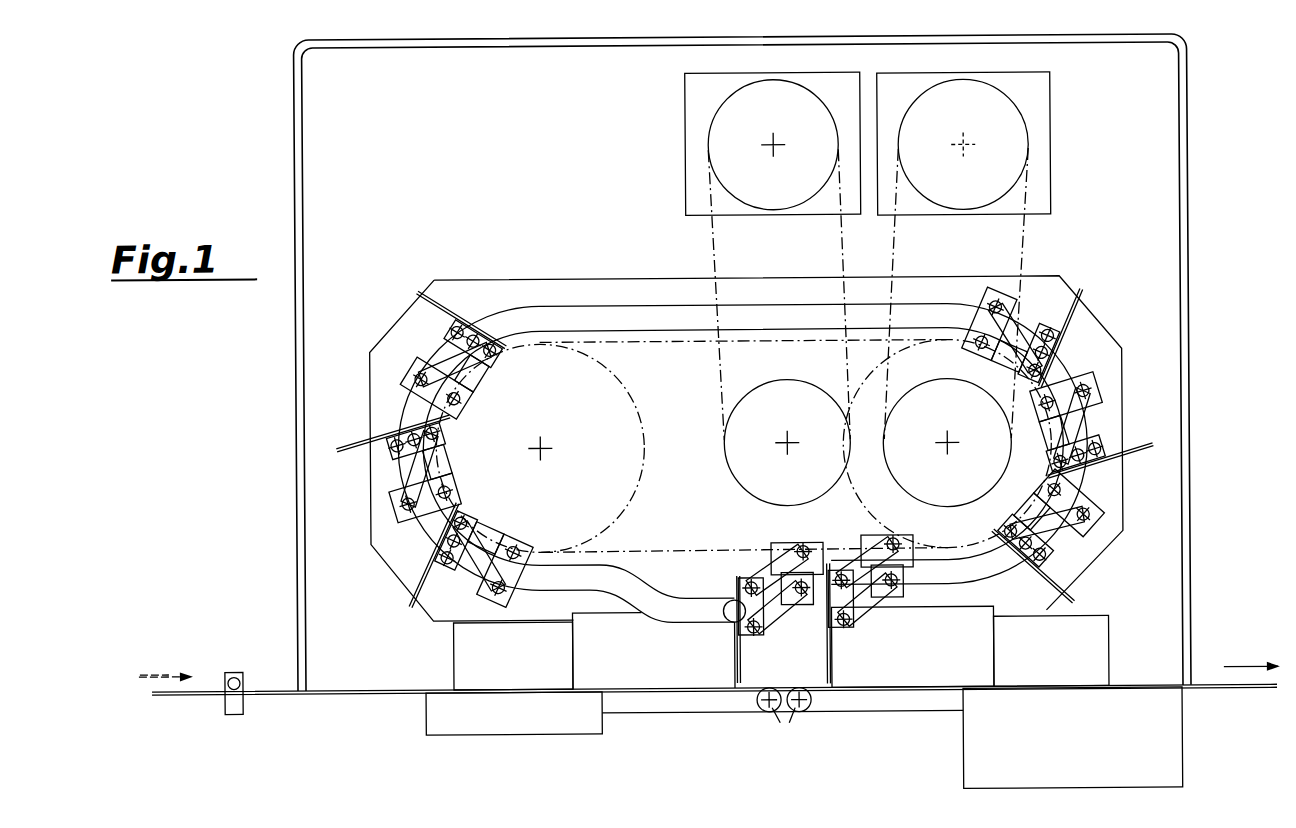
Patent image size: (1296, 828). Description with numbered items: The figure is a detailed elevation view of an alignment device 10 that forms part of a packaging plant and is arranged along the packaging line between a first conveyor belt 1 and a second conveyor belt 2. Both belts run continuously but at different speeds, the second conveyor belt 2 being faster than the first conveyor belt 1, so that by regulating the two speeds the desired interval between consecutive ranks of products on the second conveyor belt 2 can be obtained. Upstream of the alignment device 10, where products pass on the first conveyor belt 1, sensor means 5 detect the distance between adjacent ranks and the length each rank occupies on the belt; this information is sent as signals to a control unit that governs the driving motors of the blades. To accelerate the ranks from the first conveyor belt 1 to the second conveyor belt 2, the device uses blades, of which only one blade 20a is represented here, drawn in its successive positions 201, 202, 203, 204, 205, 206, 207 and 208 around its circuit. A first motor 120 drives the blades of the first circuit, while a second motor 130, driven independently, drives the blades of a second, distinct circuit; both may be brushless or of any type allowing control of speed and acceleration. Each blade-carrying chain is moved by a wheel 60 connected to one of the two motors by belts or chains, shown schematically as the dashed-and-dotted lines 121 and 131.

The alignment device 10 is at (275, 178).
The first conveyor belt 1 is at (268, 694).
The second conveyor belt 2 is at (907, 688).
The sensor means 5 is at (233, 668).
The blade 20a is at (433, 288).
The wheel 60 is at (639, 403).
The first motor 120 is at (1019, 113).
The dashed-and-dotted line 121 is at (1027, 228).
The second motor 130 is at (719, 112).
The dashed-and-dotted line 131 is at (714, 245).
The position 201 is at (421, 340).
The position 202 is at (376, 475).
The position 203 is at (460, 581).
The position 204 is at (788, 623).
The position 205 is at (877, 618).
The position 206 is at (1100, 533).
The position 207 is at (1108, 428).
The position 208 is at (1037, 305).